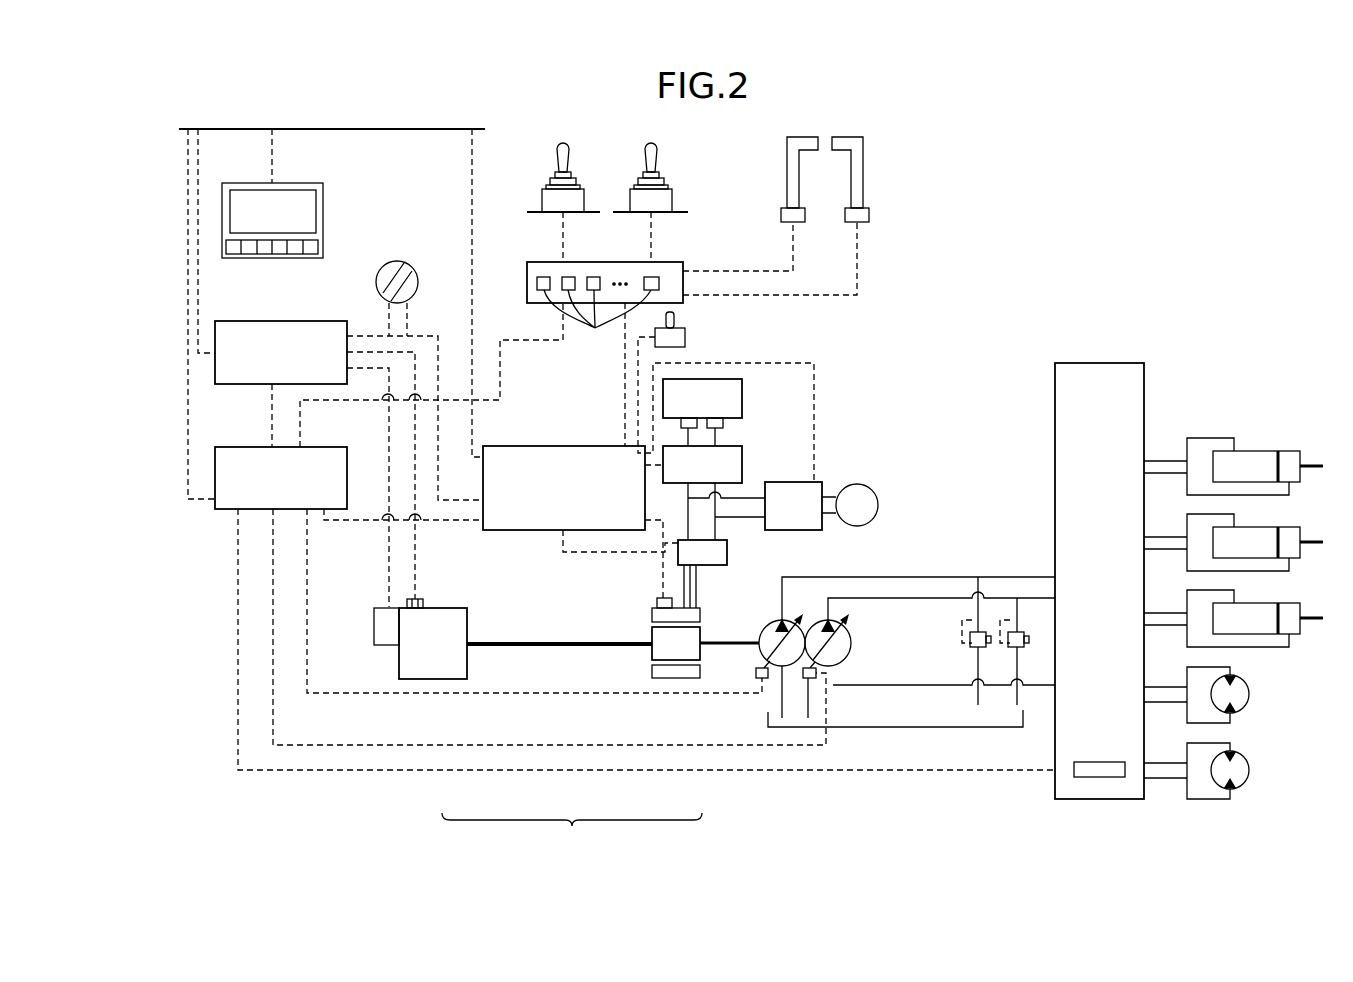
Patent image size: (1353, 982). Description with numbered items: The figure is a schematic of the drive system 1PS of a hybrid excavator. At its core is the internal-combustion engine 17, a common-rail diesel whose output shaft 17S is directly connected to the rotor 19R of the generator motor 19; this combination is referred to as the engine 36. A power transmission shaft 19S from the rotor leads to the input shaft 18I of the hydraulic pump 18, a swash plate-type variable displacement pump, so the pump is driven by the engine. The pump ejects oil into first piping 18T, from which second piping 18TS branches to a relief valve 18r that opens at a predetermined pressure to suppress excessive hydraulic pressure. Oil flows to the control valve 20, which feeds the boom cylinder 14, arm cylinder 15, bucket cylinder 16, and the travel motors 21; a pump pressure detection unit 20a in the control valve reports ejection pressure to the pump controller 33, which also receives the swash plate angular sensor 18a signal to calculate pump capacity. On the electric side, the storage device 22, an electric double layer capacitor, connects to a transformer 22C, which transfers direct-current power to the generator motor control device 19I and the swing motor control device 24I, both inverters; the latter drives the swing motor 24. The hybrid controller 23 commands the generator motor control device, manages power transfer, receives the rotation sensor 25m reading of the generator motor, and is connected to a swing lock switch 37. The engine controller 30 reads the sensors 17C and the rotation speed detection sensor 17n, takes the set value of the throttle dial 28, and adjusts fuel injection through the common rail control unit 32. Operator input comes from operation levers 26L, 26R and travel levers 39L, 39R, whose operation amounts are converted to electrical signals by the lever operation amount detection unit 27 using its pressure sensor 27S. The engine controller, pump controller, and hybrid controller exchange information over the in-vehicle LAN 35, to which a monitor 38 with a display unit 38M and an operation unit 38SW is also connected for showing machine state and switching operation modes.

The drive system 1PS is at (950, 265).
The boom cylinder 14 is at (1303, 453).
The arm cylinder 15 is at (1303, 529).
The bucket cylinder 16 is at (1303, 605).
The internal-combustion engine 17 is at (428, 616).
The rotation speed detection sensor 17n is at (412, 597).
The sensors 17C is at (398, 601).
The output shaft 17S is at (534, 640).
The hydraulic pump 18 is at (778, 620).
The input shaft 18I is at (752, 637).
The swash plate angular sensor 18a is at (756, 673).
The first piping 18T is at (935, 596).
The second piping 18TS is at (1025, 607).
The relief valve 18r is at (970, 648).
The generator motor 19 is at (686, 678).
The generator motor control device 19I is at (708, 566).
The rotor 19R is at (700, 650).
The power transmission shaft 19S is at (720, 640).
The control valve 20 is at (1103, 363).
The pump pressure detection unit 20a is at (1094, 762).
The travel motor 21 is at (1250, 693).
The storage device 22 is at (742, 393).
The transformer 22C is at (742, 449).
The hybrid controller 23 is at (496, 446).
The swing motor 24 is at (855, 484).
The swing motor control device 24I is at (797, 530).
The rotation sensor 25m is at (657, 600).
The operation lever 26L is at (541, 206).
The operation lever 26R is at (680, 206).
The lever operation amount detection unit 27 is at (671, 262).
The pressure sensor 27S is at (597, 322).
The throttle dial 28 is at (415, 296).
The engine controller 30 is at (319, 321).
The common rail control unit 32 is at (374, 625).
The pump controller 33 is at (319, 447).
The in-vehicle LAN 35 is at (337, 128).
The engine 36 is at (572, 833).
The swing lock switch 37 is at (686, 338).
The monitor 38 is at (305, 183).
The display unit 38M is at (243, 196).
The operation unit 38SW is at (320, 247).
The travel lever 39L is at (799, 137).
The travel lever 39R is at (849, 137).